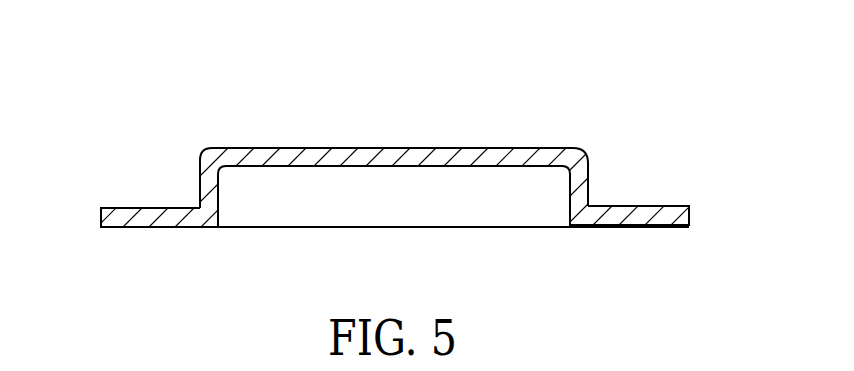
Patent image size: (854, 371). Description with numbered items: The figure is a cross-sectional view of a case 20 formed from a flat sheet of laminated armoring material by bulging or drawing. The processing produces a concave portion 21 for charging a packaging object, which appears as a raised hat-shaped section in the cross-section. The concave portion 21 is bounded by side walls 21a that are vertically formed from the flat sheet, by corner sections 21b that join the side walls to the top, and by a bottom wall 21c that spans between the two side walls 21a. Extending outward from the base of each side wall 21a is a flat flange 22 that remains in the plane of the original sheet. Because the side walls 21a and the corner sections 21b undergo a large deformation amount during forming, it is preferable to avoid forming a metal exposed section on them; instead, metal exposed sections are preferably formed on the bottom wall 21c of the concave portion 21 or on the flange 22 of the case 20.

The case 20 is at (505, 132).
The concave portion 21 is at (237, 148).
The side wall 21a is at (200, 188).
The corner section 21b is at (202, 149).
The bottom wall 21c is at (390, 157).
The flange 22 is at (650, 210).